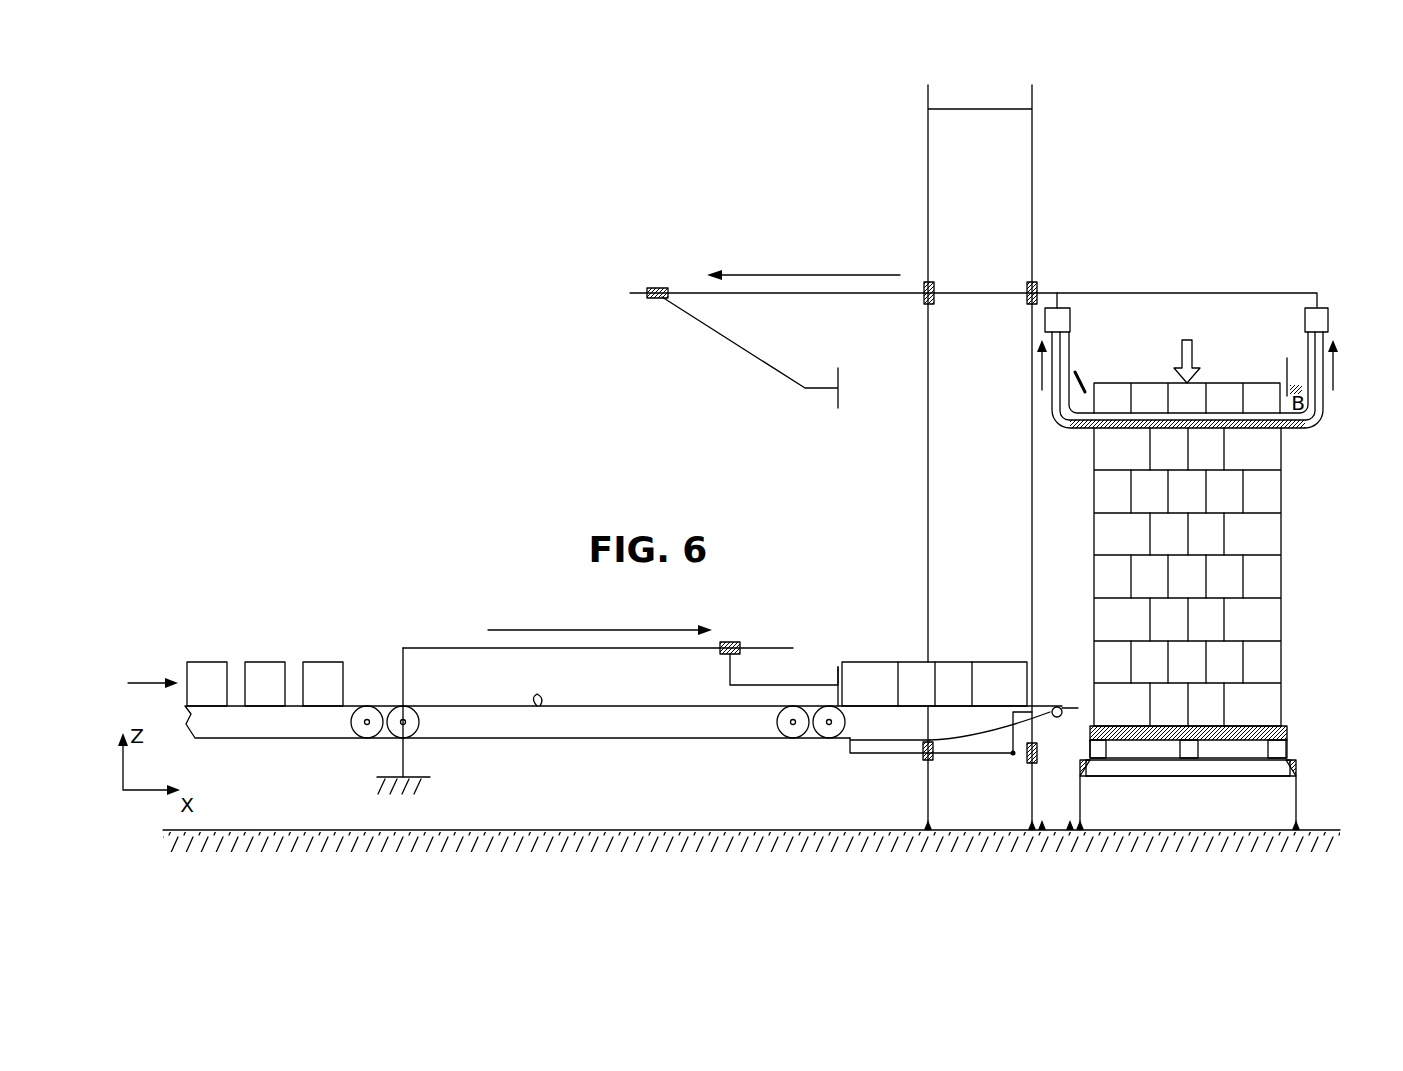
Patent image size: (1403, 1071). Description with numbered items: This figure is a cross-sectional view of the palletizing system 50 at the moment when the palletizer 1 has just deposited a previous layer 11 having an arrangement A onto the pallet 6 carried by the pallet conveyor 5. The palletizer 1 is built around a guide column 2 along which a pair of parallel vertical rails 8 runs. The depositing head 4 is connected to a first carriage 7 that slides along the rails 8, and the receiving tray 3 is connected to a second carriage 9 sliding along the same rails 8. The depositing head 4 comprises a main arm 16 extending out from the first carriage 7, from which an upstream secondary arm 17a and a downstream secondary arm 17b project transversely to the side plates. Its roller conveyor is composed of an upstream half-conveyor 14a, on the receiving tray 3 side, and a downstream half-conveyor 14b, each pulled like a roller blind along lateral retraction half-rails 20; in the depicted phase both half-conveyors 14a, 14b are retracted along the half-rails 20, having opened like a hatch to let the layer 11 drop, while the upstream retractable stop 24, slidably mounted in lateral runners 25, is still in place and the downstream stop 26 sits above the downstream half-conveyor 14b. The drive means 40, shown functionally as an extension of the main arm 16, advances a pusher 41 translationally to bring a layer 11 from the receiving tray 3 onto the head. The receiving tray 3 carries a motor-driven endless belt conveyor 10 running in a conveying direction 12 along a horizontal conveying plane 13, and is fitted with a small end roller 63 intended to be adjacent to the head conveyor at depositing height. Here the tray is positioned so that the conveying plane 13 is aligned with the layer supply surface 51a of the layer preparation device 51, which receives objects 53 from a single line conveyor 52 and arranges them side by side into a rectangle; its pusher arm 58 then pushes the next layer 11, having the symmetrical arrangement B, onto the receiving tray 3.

The palletizer 1 is at (815, 240).
The guide column 2 is at (994, 810).
The receiving tray 3 is at (873, 726).
The depositing head 4 is at (1330, 369).
The pallet conveyor 5 is at (1297, 791).
The pallet 6 is at (1285, 745).
The first carriage 7 is at (1035, 291).
The rails 8 is at (1031, 196).
The second carriage 9 is at (922, 752).
The conveyor 10 is at (848, 746).
The layer 11 is at (862, 678).
The conveying direction 12 is at (1078, 712).
The conveying plane 13 is at (881, 702).
The upstream half-conveyor 14a is at (1050, 397).
The downstream half-conveyor 14b is at (1313, 420).
The main arm 16 is at (1295, 290).
The upstream secondary arm 17a is at (1050, 320).
The downstream secondary arm 17b is at (1320, 318).
The retraction half-rails 20 is at (1048, 370).
The upstream retractable stop 24 is at (1084, 387).
The lateral runners 25 is at (1070, 368).
The downstream stop 26 is at (1283, 372).
The drive means 40 is at (683, 290).
The pusher 41 is at (722, 337).
The palletizing system 50 is at (375, 305).
The layer preparation device 51 is at (495, 725).
The layer supply surface 51a is at (540, 708).
The single line conveyor 52 is at (252, 722).
The objects 53 is at (208, 680).
The pusher arm 58 is at (810, 683).
The end roller 63 is at (1058, 708).